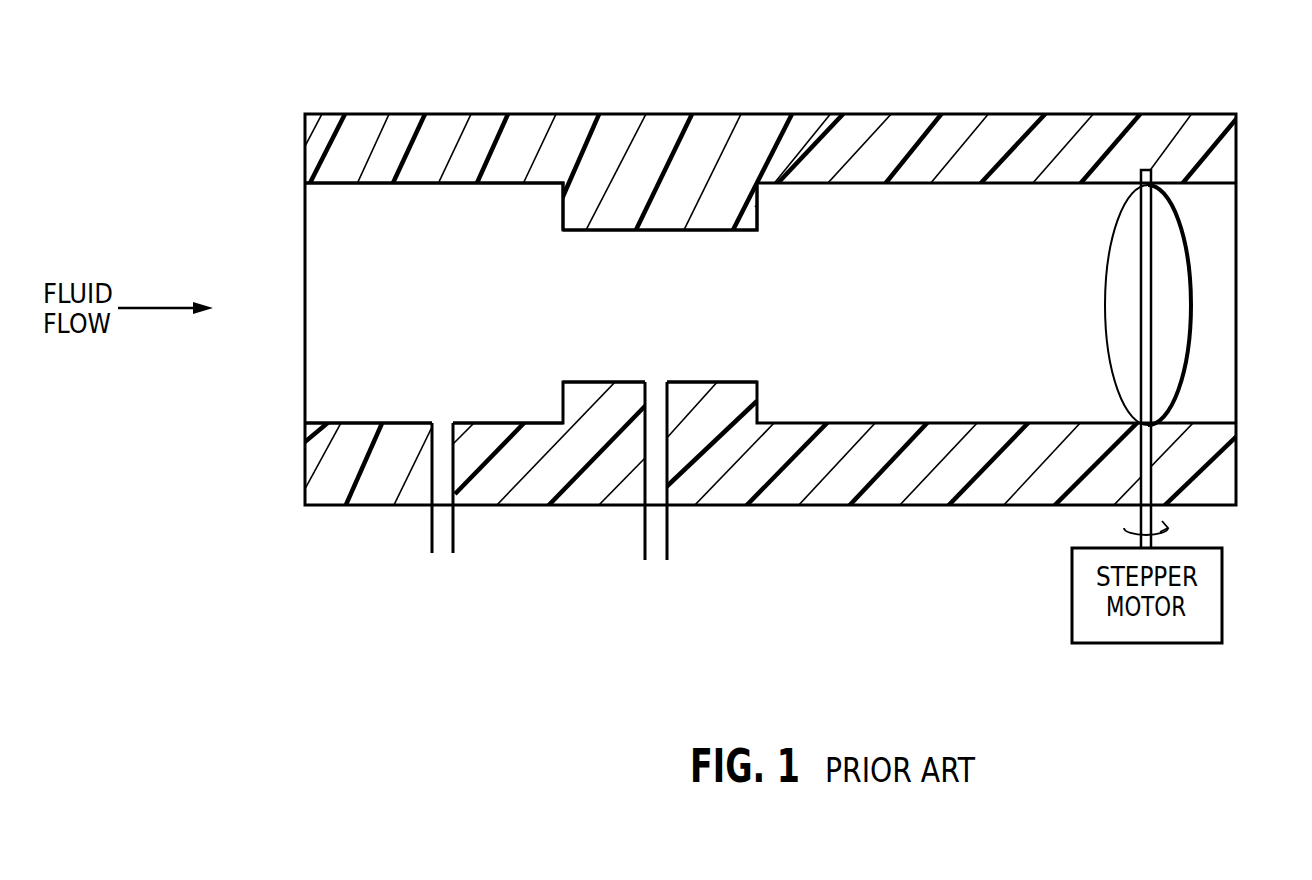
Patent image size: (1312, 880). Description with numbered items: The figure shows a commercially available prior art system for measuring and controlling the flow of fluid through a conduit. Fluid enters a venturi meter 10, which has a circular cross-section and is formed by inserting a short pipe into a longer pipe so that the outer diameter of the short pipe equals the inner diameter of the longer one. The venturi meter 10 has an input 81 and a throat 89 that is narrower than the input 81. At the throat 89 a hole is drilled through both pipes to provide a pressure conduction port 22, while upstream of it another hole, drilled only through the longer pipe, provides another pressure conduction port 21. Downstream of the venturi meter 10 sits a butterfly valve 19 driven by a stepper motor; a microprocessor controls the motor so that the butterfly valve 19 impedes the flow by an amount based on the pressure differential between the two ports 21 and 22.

The venturi meter 10 is at (303, 106).
The input 81 is at (403, 316).
The throat 89 is at (677, 322).
The butterfly valve 19 is at (1188, 243).
The pressure conduction port 21 is at (430, 537).
The pressure conduction port 22 is at (642, 535).